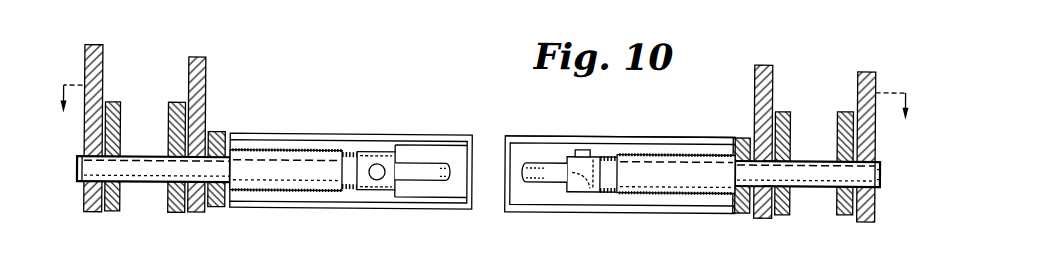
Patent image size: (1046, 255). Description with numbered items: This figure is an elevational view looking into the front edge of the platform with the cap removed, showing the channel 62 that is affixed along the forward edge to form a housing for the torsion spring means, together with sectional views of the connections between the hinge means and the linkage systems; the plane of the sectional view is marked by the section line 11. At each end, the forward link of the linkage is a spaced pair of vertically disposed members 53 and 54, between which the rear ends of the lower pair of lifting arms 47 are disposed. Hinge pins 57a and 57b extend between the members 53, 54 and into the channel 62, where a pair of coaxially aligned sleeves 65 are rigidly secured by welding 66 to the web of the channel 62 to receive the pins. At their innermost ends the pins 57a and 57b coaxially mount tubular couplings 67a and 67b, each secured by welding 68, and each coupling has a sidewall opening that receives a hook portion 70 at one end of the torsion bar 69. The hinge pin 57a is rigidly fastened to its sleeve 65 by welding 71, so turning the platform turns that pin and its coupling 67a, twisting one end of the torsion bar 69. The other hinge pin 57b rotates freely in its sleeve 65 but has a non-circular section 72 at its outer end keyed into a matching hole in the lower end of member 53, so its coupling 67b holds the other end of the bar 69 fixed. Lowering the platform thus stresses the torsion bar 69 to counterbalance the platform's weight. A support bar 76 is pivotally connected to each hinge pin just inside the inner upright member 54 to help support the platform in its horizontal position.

The section line 11 is at (479, 119).
The lower pair of lifting arms 47 is at (168, 209).
The vertically disposed member 53 is at (103, 46).
The vertically disposed member 54 is at (205, 56).
The hinge pin 57a is at (145, 157).
The hinge pin 57b is at (813, 182).
The channel 62 is at (537, 129).
The sleeve 65 is at (282, 188).
The welding 66 is at (252, 146).
The tubular coupling 67a is at (397, 145).
The tubular coupling 67b is at (603, 150).
The welding 68 is at (360, 149).
The torsion bar 69 is at (523, 166).
The hook portion 70 is at (380, 162).
The welding 71 is at (352, 192).
The non-circular section 72 is at (881, 170).
The support bar 76 is at (223, 128).